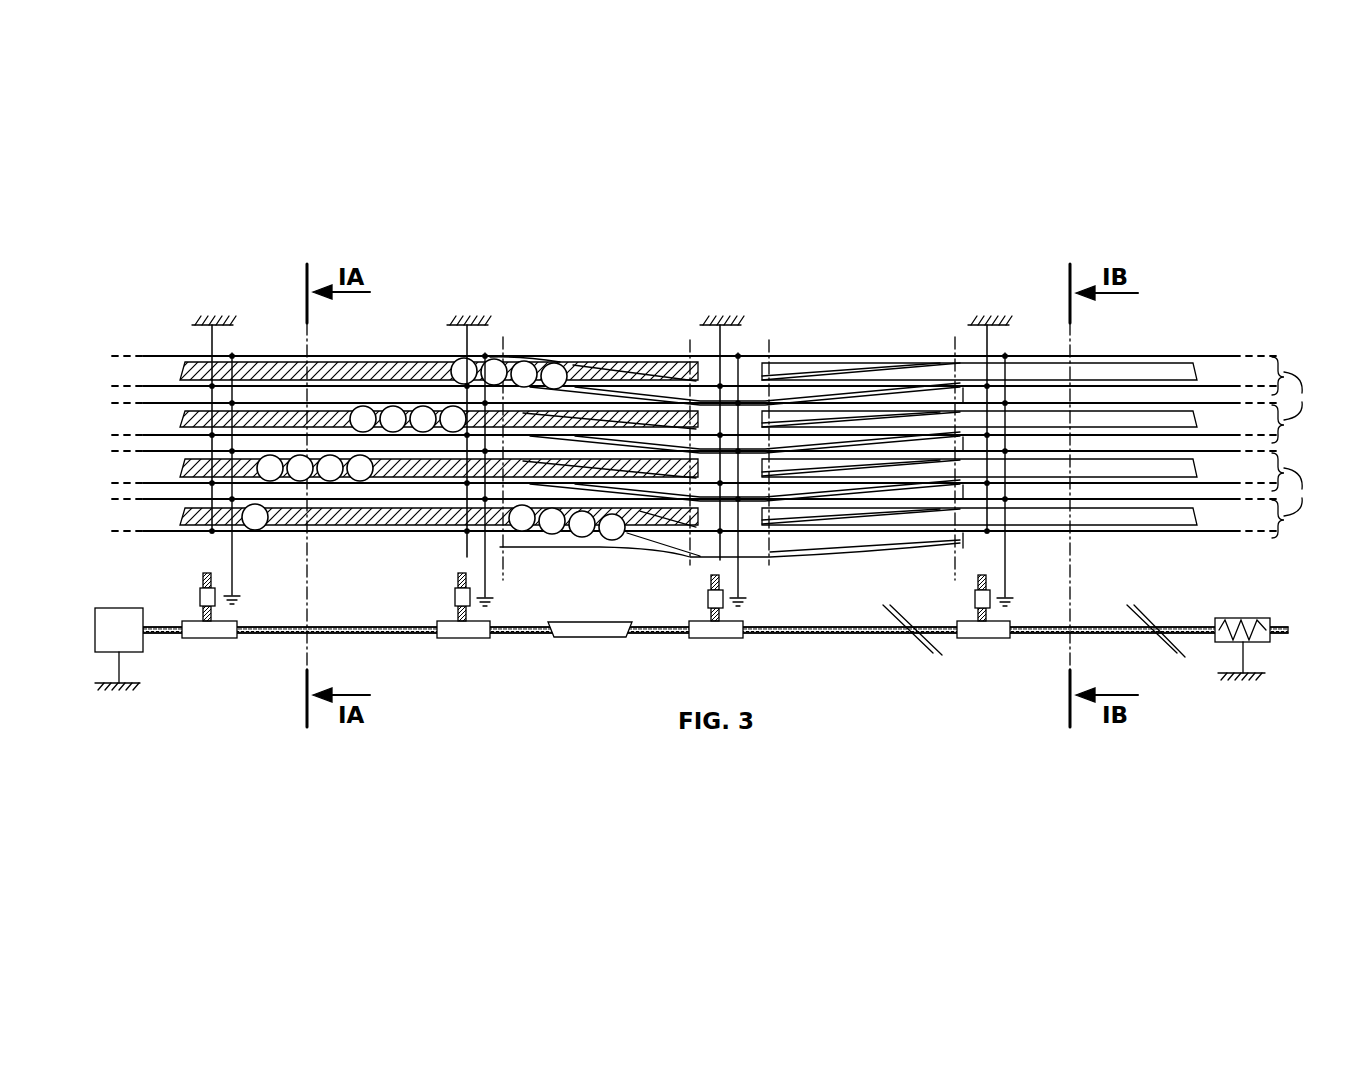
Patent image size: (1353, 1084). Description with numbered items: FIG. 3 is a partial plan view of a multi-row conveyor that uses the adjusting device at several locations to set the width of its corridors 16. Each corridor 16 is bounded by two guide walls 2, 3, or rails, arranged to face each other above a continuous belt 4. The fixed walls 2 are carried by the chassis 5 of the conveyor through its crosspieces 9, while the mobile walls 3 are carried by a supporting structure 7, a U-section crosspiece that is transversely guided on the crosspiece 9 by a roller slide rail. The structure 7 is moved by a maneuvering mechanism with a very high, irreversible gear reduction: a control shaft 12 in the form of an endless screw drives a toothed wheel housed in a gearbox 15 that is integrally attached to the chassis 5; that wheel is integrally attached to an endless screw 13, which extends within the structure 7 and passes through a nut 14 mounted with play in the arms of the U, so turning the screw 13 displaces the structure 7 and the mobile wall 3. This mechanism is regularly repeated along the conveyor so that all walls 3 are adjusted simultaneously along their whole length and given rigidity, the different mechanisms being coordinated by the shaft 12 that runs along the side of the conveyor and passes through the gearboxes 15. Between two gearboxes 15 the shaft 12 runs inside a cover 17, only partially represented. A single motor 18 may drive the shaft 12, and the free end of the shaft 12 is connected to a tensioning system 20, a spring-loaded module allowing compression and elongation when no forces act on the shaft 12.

The fixed guide wall 2 is at (150, 380).
The mobile guide wall 3 is at (156, 356).
The continuous belt 4 is at (333, 420).
The chassis 5 is at (210, 321).
The supporting structure 7 is at (232, 575).
The crosspiece 9 is at (212, 340).
The control shaft 12 is at (165, 640).
The endless screw 13 is at (203, 578).
The nut 14 is at (200, 597).
The gearbox 15 is at (208, 638).
The corridor 16 is at (1295, 447).
The cover 17 is at (610, 638).
The motor 18 is at (107, 608).
The tensioning system 20 is at (1260, 609).